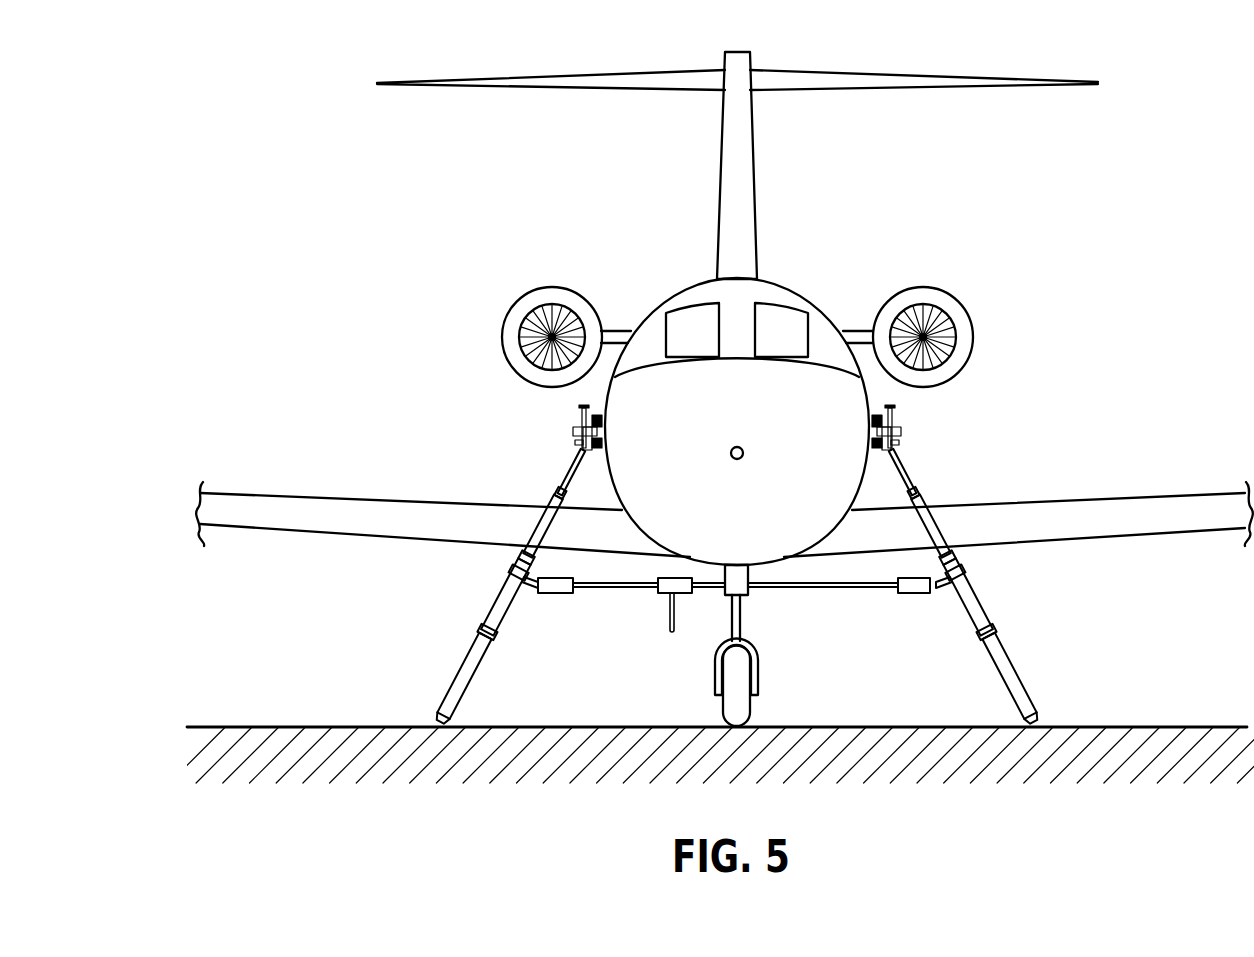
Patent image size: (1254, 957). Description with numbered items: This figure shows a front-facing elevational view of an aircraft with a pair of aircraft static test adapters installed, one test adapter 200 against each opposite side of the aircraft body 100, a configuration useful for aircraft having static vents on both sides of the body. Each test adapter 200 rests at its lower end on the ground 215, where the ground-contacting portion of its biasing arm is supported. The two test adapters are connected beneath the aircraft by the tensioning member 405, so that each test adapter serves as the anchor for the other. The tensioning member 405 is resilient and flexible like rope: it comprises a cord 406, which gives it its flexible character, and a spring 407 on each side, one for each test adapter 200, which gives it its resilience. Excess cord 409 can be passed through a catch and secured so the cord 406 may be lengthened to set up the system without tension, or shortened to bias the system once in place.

The aircraft body 100 is at (608, 471).
The test adapter 200 is at (505, 600).
The ground 215 is at (1160, 727).
The tensioning member 405 is at (833, 588).
The cord 406 is at (665, 594).
The spring 407 is at (553, 594).
The excess cord 409 is at (674, 628).